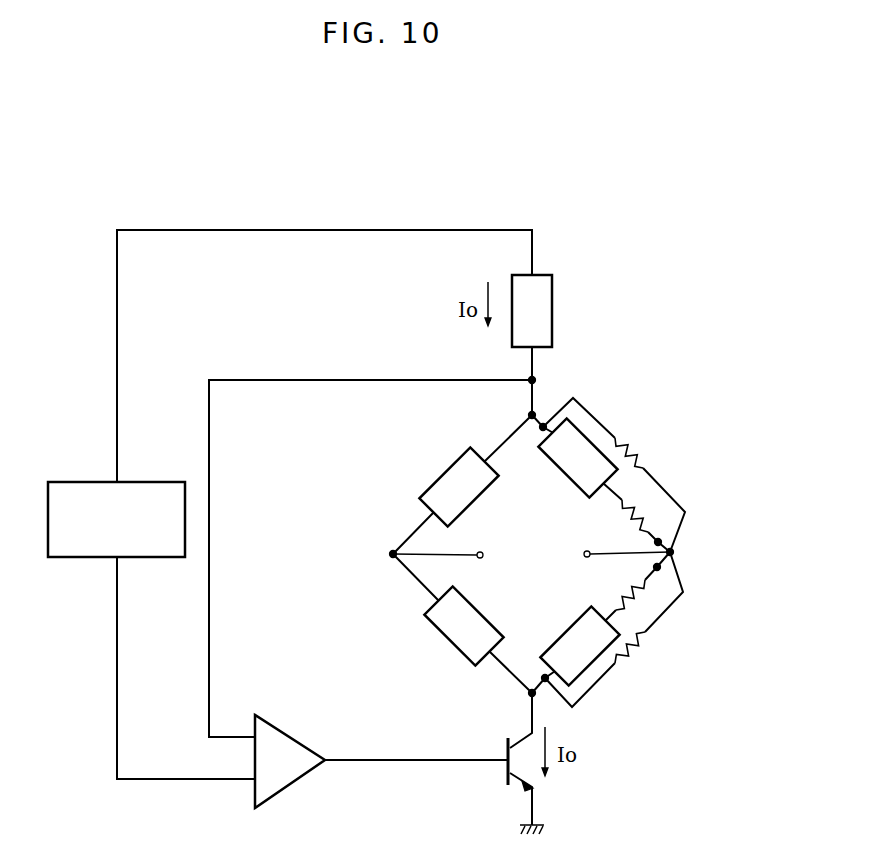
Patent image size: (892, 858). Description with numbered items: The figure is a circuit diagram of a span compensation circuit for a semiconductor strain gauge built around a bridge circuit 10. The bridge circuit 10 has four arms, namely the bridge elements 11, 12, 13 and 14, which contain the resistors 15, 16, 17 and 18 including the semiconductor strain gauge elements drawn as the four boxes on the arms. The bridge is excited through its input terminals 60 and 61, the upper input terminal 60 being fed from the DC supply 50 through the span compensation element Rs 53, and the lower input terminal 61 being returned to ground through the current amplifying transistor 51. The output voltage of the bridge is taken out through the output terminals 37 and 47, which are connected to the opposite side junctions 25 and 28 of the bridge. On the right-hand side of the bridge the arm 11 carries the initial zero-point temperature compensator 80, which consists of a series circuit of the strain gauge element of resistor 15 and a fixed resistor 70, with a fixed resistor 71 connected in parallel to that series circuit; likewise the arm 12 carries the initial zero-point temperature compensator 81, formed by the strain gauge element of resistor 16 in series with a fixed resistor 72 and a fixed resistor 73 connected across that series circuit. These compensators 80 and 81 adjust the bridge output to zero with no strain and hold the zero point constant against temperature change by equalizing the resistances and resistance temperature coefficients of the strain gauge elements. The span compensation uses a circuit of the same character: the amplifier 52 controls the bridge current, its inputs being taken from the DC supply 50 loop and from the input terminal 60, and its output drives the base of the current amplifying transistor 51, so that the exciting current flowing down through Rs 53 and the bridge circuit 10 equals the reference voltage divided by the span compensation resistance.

The bridge circuit 10 is at (529, 555).
The arm 11 is at (543, 426).
The arm 12 is at (544, 686).
The arm 13 is at (419, 580).
The arm 14 is at (508, 439).
The resistor 15 is at (562, 471).
The resistor 16 is at (573, 624).
The resistor 17 is at (457, 648).
The resistor 18 is at (442, 474).
The bridge output node 25 is at (677, 549).
The bridge output node 28 is at (393, 554).
The output terminal 37 is at (587, 557).
The output terminal 47 is at (481, 558).
The DC supply 50 is at (157, 482).
The current amplifying transistor 51 is at (503, 764).
The amplifier 52 is at (309, 771).
The sensing resistor Rs 53 is at (552, 288).
The input terminal 60 is at (532, 380).
The input terminal 61 is at (525, 695).
The fixed resistor 70 is at (628, 519).
The fixed resistor 71 is at (633, 452).
The fixed resistor 72 is at (640, 590).
The fixed resistor 73 is at (637, 645).
The initial zero-point temperature compensator 80 is at (629, 475).
The initial zero-point temperature compensator 81 is at (625, 629).